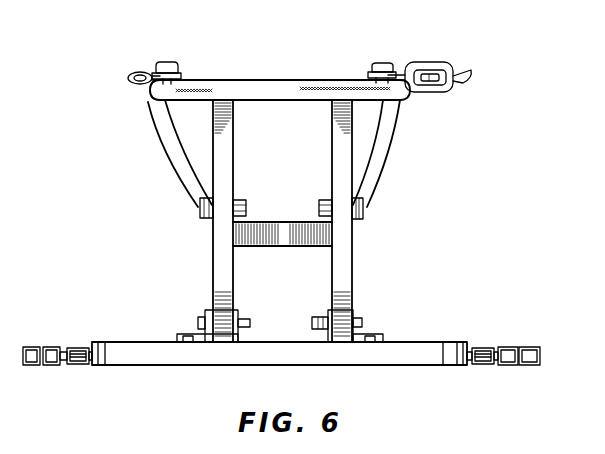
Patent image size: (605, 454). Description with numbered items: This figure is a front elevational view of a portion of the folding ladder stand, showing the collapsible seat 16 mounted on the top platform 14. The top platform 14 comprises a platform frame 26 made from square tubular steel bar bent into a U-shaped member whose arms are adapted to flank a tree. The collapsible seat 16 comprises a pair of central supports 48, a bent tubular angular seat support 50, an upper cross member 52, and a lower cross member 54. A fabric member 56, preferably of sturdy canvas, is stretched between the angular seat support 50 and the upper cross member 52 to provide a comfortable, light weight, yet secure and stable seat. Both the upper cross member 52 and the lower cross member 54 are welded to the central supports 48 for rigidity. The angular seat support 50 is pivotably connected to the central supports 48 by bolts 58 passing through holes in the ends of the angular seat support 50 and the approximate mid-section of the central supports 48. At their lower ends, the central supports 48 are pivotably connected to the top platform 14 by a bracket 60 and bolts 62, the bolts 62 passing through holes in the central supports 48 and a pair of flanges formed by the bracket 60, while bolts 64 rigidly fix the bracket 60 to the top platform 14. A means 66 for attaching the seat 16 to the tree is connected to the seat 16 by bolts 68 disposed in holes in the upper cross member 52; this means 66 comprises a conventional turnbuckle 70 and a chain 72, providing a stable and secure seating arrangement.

The top platform 14 is at (491, 333).
The collapsible seat 16 is at (447, 225).
The platform frame 26 is at (404, 366).
The central supports 48 is at (213, 281).
The angular seat support 50 is at (395, 137).
The upper cross member 52 is at (150, 96).
The lower cross member 54 is at (252, 243).
The fabric member 56 is at (268, 104).
The bolts 58 is at (200, 209).
The bracket 60 is at (362, 312).
The bolts 62 is at (198, 323).
The bolts 64 is at (184, 337).
The means for attaching seat to tree 66 is at (399, 53).
The bolts 68 is at (162, 62).
The turnbuckle 70 is at (454, 63).
The chain 72 is at (129, 77).